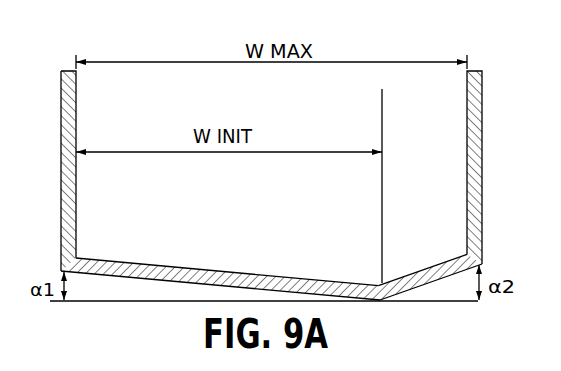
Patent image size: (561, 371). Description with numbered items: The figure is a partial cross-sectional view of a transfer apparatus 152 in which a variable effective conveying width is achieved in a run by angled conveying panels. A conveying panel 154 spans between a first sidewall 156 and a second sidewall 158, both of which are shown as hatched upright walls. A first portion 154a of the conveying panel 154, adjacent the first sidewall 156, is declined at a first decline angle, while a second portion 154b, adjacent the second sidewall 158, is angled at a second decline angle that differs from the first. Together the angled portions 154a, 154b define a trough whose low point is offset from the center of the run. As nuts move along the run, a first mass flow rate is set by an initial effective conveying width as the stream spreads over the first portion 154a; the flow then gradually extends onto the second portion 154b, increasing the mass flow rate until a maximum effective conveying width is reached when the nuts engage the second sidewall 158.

The transfer apparatus 152 is at (271, 162).
The conveying panel 154 is at (271, 258).
The first portion of the conveying panel 154a is at (157, 265).
The second portion of the conveying panel 154b is at (431, 266).
The first sidewall 156 is at (77, 106).
The second sidewall 158 is at (467, 106).